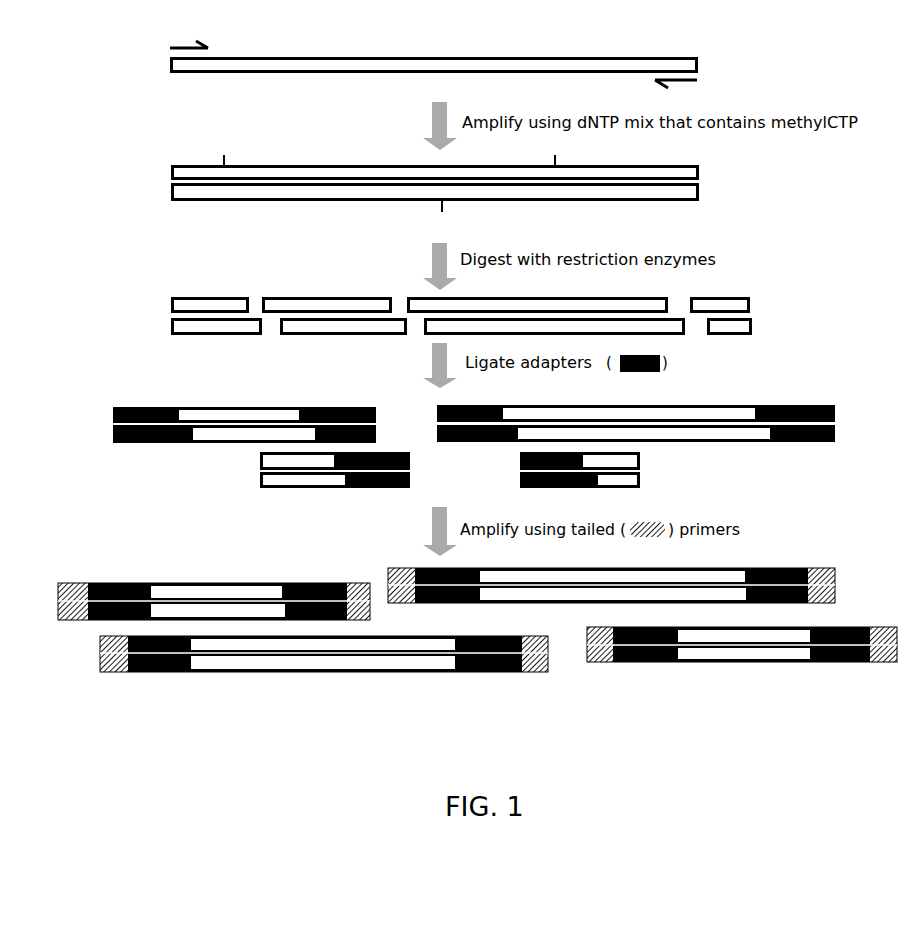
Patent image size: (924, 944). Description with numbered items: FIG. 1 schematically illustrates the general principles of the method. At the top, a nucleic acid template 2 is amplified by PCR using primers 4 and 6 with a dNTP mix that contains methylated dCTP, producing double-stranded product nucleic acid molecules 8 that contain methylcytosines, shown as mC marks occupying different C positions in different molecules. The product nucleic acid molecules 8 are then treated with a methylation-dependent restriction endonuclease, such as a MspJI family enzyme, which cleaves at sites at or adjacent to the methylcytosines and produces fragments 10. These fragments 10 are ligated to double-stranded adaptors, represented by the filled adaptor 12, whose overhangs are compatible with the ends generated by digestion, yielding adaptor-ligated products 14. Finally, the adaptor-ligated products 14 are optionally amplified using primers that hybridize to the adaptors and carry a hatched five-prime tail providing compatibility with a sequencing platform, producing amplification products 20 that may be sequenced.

The nucleic acid template 2 is at (443, 57).
The primer 4 is at (186, 38).
The primer 6 is at (676, 93).
The product nucleic acid molecules 8 is at (442, 190).
The fragments 10 is at (465, 307).
The adaptor 12 is at (656, 364).
The adaptor-ligated products 14 is at (474, 438).
The amplification products 20 is at (477, 611).